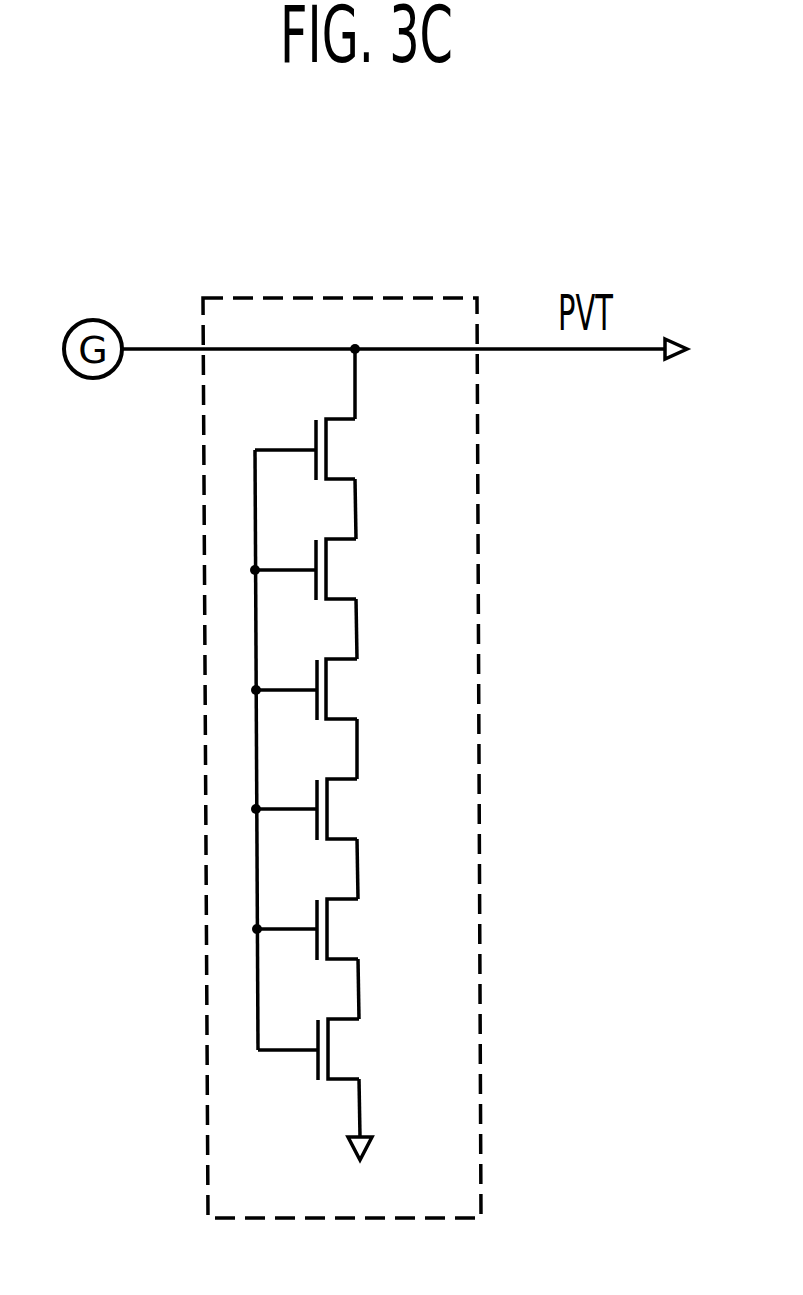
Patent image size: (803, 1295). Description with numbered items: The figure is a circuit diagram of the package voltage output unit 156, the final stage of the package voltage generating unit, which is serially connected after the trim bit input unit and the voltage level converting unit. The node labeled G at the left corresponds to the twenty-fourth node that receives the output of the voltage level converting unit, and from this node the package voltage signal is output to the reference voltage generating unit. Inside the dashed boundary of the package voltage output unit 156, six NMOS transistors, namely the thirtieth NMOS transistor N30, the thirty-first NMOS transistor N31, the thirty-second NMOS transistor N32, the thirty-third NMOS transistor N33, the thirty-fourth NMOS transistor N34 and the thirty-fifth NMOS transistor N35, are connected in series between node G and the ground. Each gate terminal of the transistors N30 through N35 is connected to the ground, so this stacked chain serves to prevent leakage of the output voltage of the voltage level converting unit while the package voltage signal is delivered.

The package voltage output unit 156 is at (323, 298).
The thirtieth NMOS transistor N30 is at (336, 449).
The thirty-first NMOS transistor N31 is at (334, 569).
The thirty-second NMOS transistor N32 is at (334, 689).
The thirty-third NMOS transistor N33 is at (334, 809).
The thirty-fourth NMOS transistor N34 is at (335, 929).
The thirty-fifth NMOS transistor N35 is at (339, 1050).